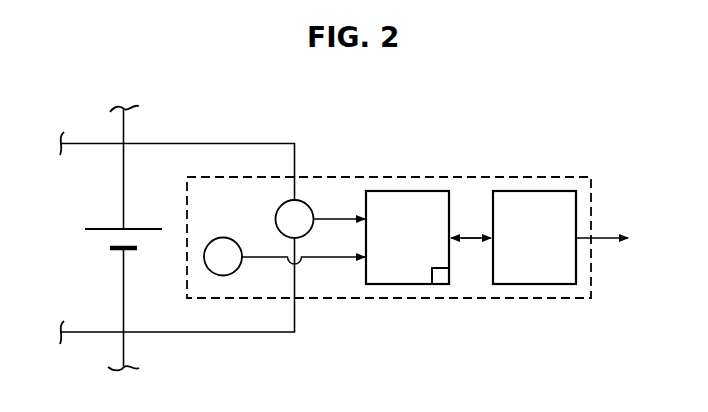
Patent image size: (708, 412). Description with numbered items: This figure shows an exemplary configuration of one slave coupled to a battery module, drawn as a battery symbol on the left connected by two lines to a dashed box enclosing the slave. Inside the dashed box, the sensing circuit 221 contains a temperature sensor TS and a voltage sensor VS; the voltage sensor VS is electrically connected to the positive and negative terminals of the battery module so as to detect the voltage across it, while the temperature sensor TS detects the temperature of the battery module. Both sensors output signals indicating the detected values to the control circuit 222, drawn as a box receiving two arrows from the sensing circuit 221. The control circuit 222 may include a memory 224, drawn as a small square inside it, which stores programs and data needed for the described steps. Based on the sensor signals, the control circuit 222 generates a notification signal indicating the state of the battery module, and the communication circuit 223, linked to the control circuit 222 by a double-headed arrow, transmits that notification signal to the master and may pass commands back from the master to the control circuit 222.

The sensing circuit 221 is at (255, 231).
The control circuit 222 is at (407, 285).
The communication circuit 223 is at (555, 285).
The memory 224 is at (442, 285).
The voltage sensor VS is at (308, 206).
The temperature sensor TS is at (236, 270).